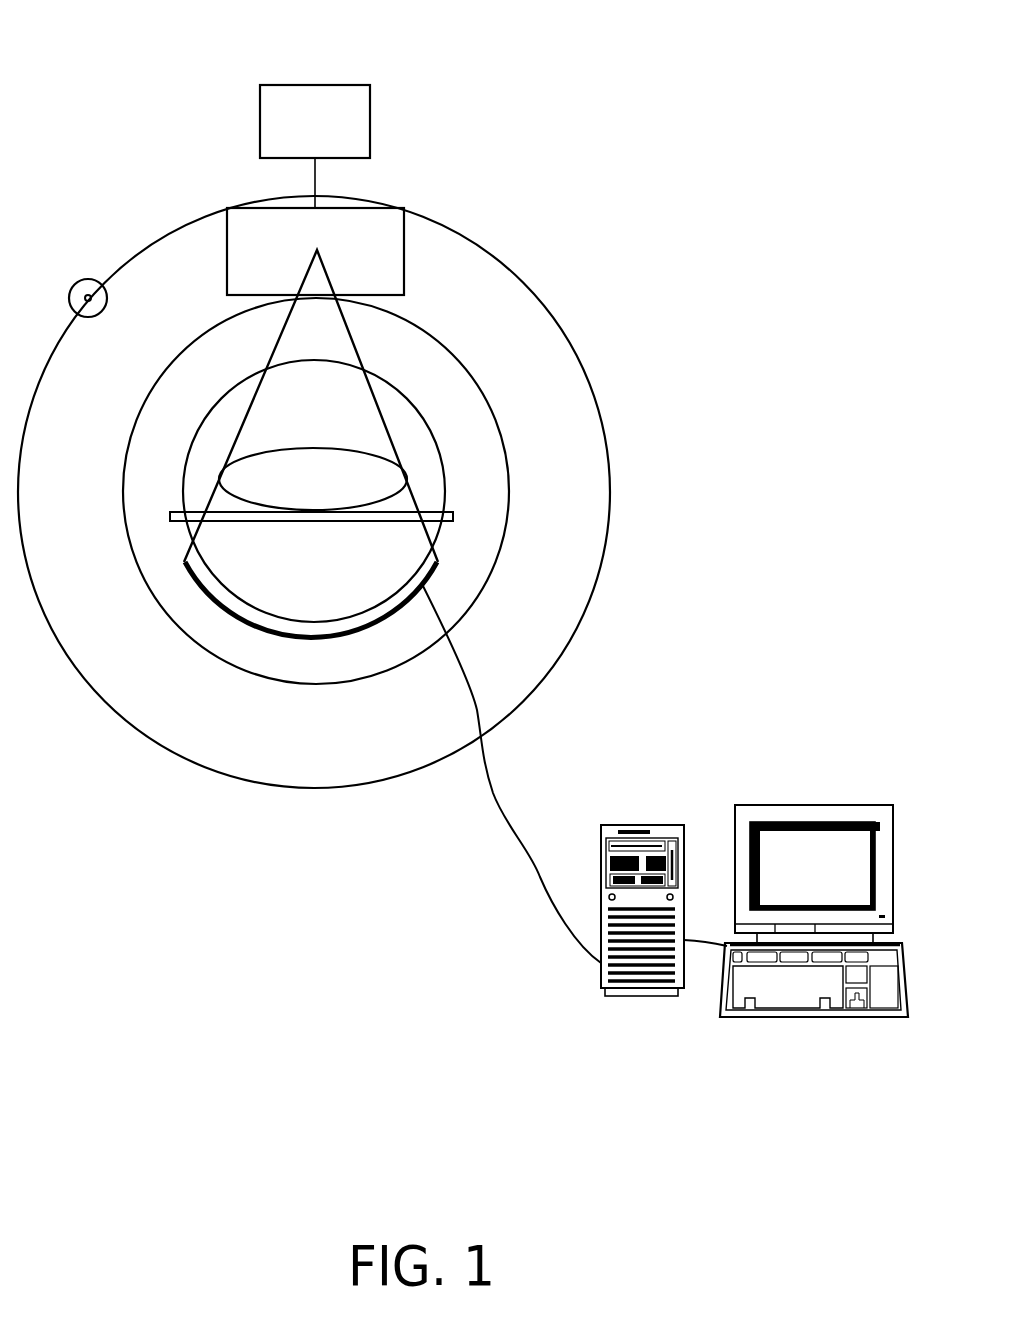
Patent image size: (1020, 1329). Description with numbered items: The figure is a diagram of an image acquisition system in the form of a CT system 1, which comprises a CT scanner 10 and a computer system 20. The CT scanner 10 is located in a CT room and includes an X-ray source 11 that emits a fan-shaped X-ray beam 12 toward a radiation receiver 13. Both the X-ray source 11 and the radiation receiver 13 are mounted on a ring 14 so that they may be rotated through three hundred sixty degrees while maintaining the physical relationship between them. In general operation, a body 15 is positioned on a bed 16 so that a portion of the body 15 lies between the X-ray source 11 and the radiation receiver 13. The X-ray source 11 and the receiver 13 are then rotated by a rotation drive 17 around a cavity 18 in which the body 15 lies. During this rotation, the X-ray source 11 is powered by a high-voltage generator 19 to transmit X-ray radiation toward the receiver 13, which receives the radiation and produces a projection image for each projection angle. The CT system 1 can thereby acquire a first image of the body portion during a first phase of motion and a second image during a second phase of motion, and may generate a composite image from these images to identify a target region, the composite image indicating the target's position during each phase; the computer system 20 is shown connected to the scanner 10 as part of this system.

The CT system 1 is at (538, 55).
The CT scanner 10 is at (572, 228).
The X-ray source 11 is at (405, 240).
The fan-shaped X-ray beam 12 is at (363, 362).
The radiation receiver 13 is at (340, 638).
The ring 14 is at (608, 440).
The body 15 is at (312, 448).
The bed 16 is at (270, 523).
The rotation drive 17 is at (70, 300).
The cavity 18 is at (202, 447).
The high-voltage generator 19 is at (370, 122).
The computer system 20 is at (698, 765).